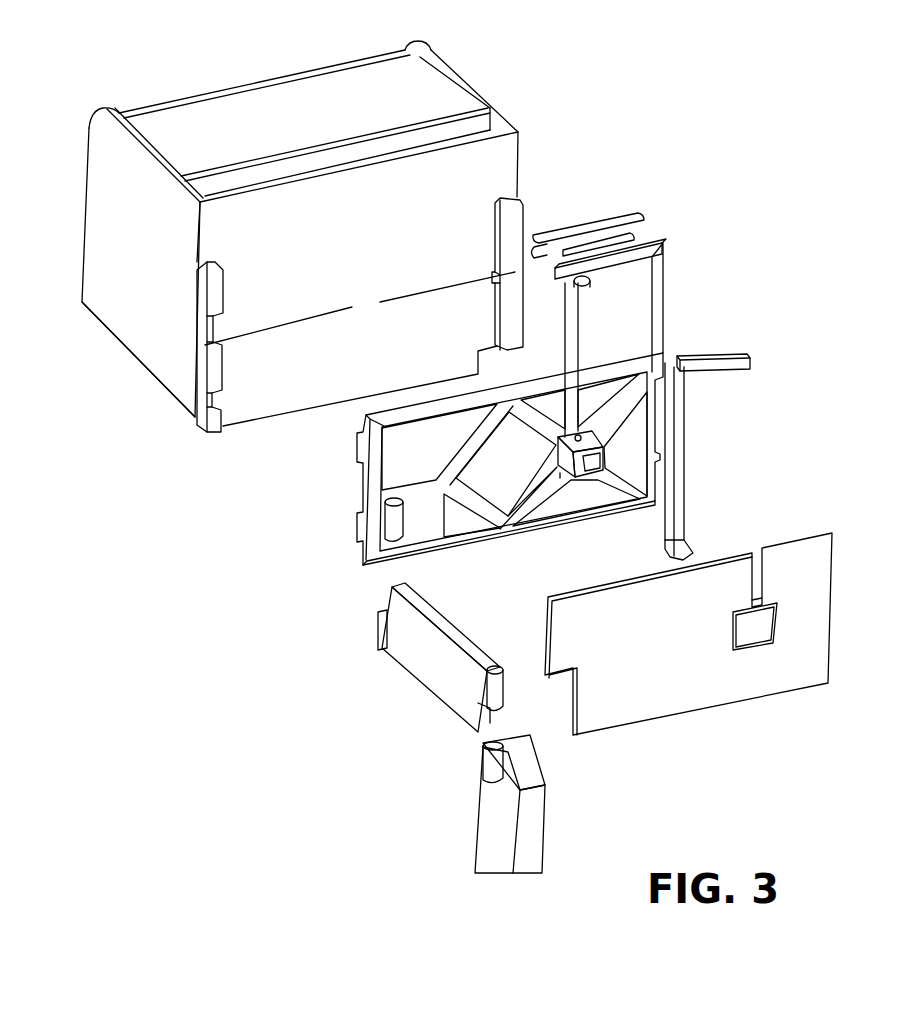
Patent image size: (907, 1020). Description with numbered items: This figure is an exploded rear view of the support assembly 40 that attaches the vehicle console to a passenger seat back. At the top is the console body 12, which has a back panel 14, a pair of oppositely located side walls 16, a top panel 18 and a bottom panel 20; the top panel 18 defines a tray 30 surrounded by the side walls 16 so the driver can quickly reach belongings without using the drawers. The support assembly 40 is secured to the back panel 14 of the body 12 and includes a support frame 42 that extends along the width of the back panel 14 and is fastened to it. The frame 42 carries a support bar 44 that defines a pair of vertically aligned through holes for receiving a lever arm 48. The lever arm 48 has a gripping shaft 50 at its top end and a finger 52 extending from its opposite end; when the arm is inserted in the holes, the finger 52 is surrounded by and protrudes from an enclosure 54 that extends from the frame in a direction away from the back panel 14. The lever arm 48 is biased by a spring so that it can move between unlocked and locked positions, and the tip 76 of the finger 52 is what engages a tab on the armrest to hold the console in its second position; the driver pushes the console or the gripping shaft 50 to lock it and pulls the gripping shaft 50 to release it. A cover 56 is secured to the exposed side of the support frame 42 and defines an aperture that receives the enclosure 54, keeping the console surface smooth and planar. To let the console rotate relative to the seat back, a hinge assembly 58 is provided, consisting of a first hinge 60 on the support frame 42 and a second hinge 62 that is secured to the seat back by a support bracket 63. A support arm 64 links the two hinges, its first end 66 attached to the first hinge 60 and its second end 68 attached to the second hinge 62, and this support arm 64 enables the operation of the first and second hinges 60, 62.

The body 12 is at (321, 255).
The back panel 14 is at (232, 413).
The side walls 16 is at (103, 222).
The top panel 18 is at (150, 118).
The bottom panel 20 is at (138, 365).
The tray 30 is at (132, 140).
The support assembly 40 is at (500, 413).
The support frame 42 is at (653, 315).
The support bar 44 is at (573, 347).
The lever arm 48 is at (736, 435).
The gripping shaft 50 is at (725, 363).
The finger 52 is at (713, 533).
The enclosure 54 is at (593, 473).
The cover 56 is at (720, 634).
The hinge assembly 58 is at (438, 664).
The first hinge 60 is at (393, 523).
The second hinge 62 is at (482, 767).
The support bracket 63 is at (517, 804).
The support arm 64 is at (440, 650).
The first end 66 is at (378, 618).
The second end 68 is at (495, 723).
The tip 76 is at (682, 558).